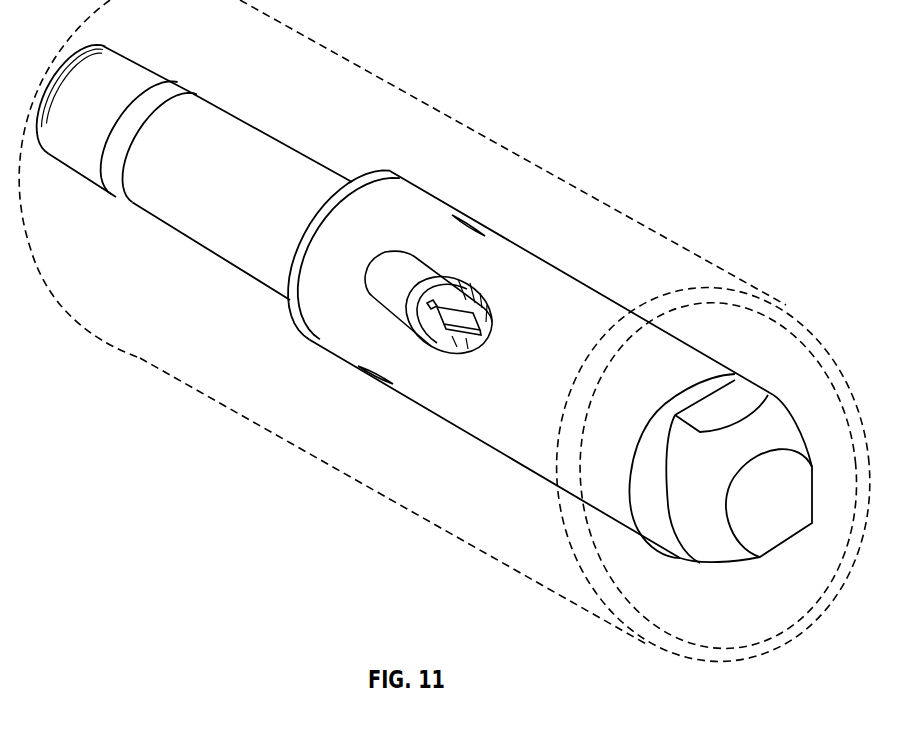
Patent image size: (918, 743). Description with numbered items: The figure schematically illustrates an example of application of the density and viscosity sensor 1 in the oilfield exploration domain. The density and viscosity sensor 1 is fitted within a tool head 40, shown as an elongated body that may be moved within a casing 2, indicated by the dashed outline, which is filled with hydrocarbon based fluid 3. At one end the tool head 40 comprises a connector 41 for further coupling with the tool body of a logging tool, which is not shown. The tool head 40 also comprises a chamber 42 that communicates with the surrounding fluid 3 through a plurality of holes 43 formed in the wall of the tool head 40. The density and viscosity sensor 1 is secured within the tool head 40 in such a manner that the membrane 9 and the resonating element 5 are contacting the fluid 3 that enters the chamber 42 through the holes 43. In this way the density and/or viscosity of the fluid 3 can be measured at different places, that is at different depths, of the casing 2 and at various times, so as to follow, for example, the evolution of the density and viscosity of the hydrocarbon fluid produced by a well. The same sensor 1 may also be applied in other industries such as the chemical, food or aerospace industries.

The density and viscosity sensor 1 is at (463, 345).
The casing 2 is at (467, 130).
The hydrocarbon based fluid 3 is at (240, 399).
The resonating element 5 is at (480, 290).
The membrane 9 is at (422, 323).
The tool head 40 is at (368, 86).
The connector 41 is at (128, 63).
The chamber 42 is at (470, 300).
The holes 43 is at (462, 218).